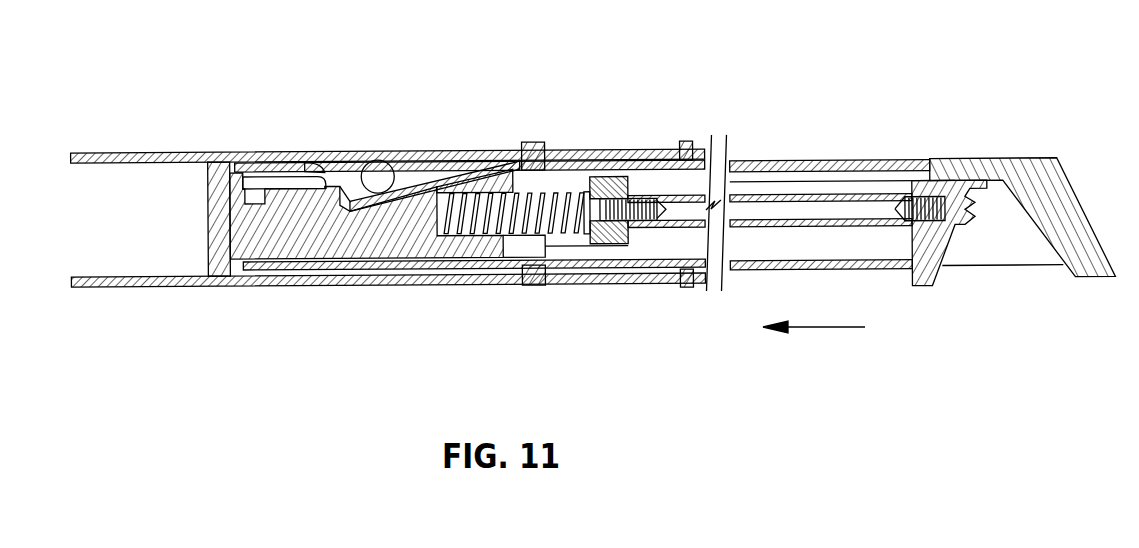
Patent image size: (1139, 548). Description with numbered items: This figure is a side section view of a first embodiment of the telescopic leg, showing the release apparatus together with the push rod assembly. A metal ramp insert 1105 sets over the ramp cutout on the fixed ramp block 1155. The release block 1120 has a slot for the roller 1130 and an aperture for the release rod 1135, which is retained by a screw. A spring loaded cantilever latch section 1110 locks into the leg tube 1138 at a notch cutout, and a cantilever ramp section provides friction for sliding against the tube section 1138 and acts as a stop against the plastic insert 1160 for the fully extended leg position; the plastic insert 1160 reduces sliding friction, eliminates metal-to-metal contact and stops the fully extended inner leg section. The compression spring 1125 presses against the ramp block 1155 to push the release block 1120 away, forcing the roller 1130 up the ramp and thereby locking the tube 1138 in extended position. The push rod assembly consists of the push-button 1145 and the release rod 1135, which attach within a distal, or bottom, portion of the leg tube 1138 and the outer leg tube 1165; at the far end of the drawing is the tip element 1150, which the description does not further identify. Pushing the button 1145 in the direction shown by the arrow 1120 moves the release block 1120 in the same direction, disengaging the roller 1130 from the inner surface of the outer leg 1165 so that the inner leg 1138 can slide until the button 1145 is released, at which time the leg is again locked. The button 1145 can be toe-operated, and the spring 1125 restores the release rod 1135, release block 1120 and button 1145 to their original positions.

The metal ramp insert 1105 is at (382, 172).
The spring loaded cantilever latch section 1110 is at (246, 165).
The release block 1120 is at (348, 185).
The compression spring 1125 is at (470, 272).
The roller 1130 is at (405, 183).
The release rod 1135 is at (660, 150).
The leg tube 1138 is at (265, 162).
The push-button 1145 is at (937, 268).
The tip 1150 is at (1052, 196).
The fixed ramp block 1155 is at (220, 232).
The plastic insert 1160 is at (526, 143).
The outer leg tube 1165 is at (160, 152).